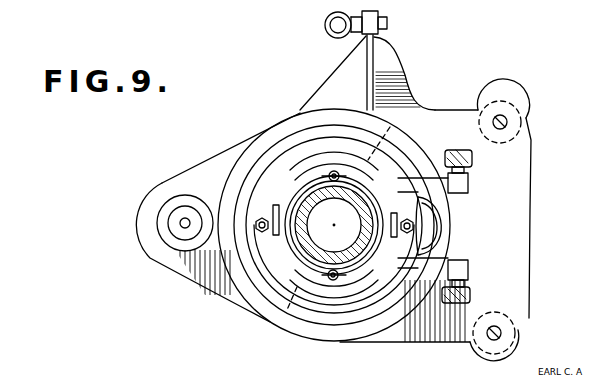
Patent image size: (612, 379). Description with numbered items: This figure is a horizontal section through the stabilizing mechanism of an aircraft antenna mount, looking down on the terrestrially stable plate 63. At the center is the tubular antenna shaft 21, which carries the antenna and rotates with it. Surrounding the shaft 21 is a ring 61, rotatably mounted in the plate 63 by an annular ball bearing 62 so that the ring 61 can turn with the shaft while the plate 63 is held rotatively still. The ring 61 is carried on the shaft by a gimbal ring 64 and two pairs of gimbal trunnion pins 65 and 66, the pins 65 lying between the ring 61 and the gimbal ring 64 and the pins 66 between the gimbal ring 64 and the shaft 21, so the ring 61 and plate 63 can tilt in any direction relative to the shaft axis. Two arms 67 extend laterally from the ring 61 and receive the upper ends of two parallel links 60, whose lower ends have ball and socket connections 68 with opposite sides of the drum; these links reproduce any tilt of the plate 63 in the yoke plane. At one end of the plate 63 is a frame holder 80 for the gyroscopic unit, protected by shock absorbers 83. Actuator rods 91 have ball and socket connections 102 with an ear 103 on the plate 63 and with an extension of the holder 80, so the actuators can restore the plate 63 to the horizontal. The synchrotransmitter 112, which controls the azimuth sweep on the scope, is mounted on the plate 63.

The tubular shaft 21 is at (330, 196).
The parallel links 60 is at (462, 150).
The ring 61 is at (300, 330).
The annular ball bearing 62 is at (250, 303).
The plate 63 is at (532, 140).
The gimbal ring 64 is at (357, 265).
The gimbal trunnion pins 65 is at (255, 185).
The gimbal trunnion pins 66 is at (390, 127).
The arms 67 is at (427, 273).
The ball and socket universal joint connection 68 is at (470, 170).
The frame holder 80 is at (528, 210).
The shock absorbers 83 is at (520, 103).
The rod 91 is at (325, 27).
The ball and socket connection 102 is at (347, 33).
The ear 103 is at (377, 72).
The synchrotransmitter 112 is at (170, 240).